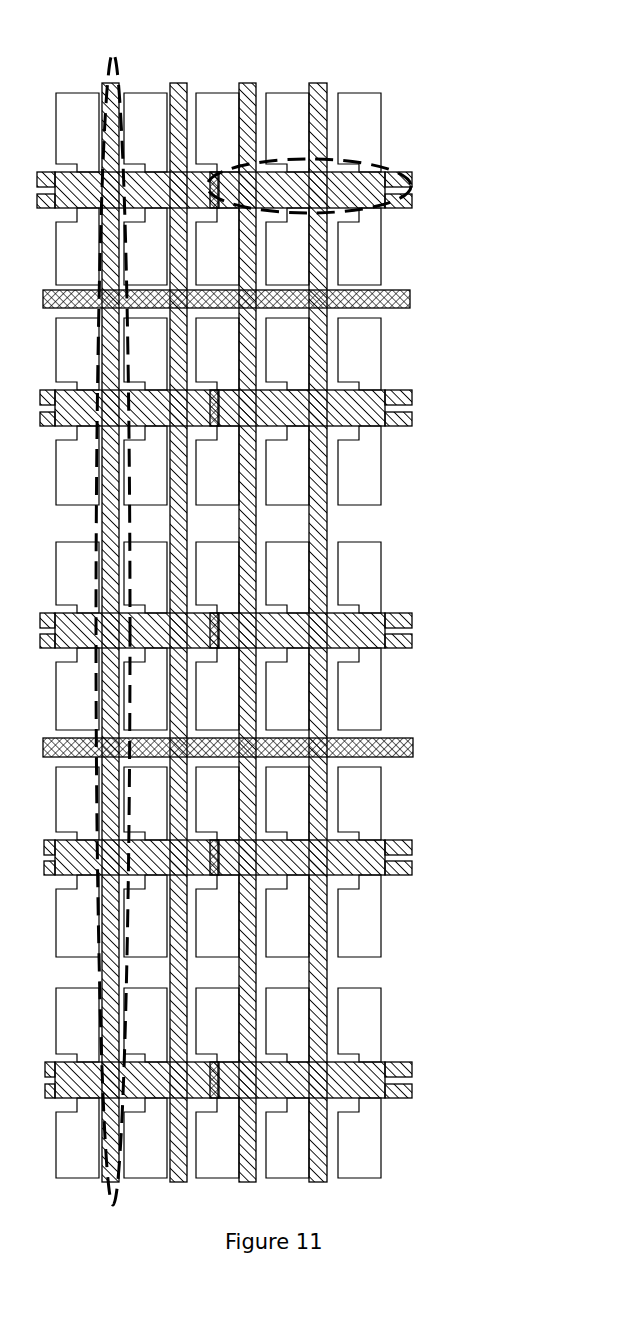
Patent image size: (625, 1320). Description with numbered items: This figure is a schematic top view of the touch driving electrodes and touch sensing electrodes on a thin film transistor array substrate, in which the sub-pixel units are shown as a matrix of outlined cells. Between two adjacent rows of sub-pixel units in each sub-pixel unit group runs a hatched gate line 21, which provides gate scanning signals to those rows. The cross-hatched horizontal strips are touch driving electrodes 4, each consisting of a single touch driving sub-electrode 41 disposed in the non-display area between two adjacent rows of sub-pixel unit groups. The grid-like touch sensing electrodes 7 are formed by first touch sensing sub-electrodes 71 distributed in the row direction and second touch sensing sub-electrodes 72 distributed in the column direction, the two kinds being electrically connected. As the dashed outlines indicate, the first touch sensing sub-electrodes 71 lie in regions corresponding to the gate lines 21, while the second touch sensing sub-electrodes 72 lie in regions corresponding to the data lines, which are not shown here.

The second touch sensing sub-electrode 72 is at (118, 83).
The first touch sensing sub-electrode 71 is at (363, 162).
The gate line 21 is at (410, 208).
The touch driving electrode 4 is at (402, 308).
The touch driving sub-electrode 41 is at (412, 757).
The touch sensing electrode 7 is at (385, 427).